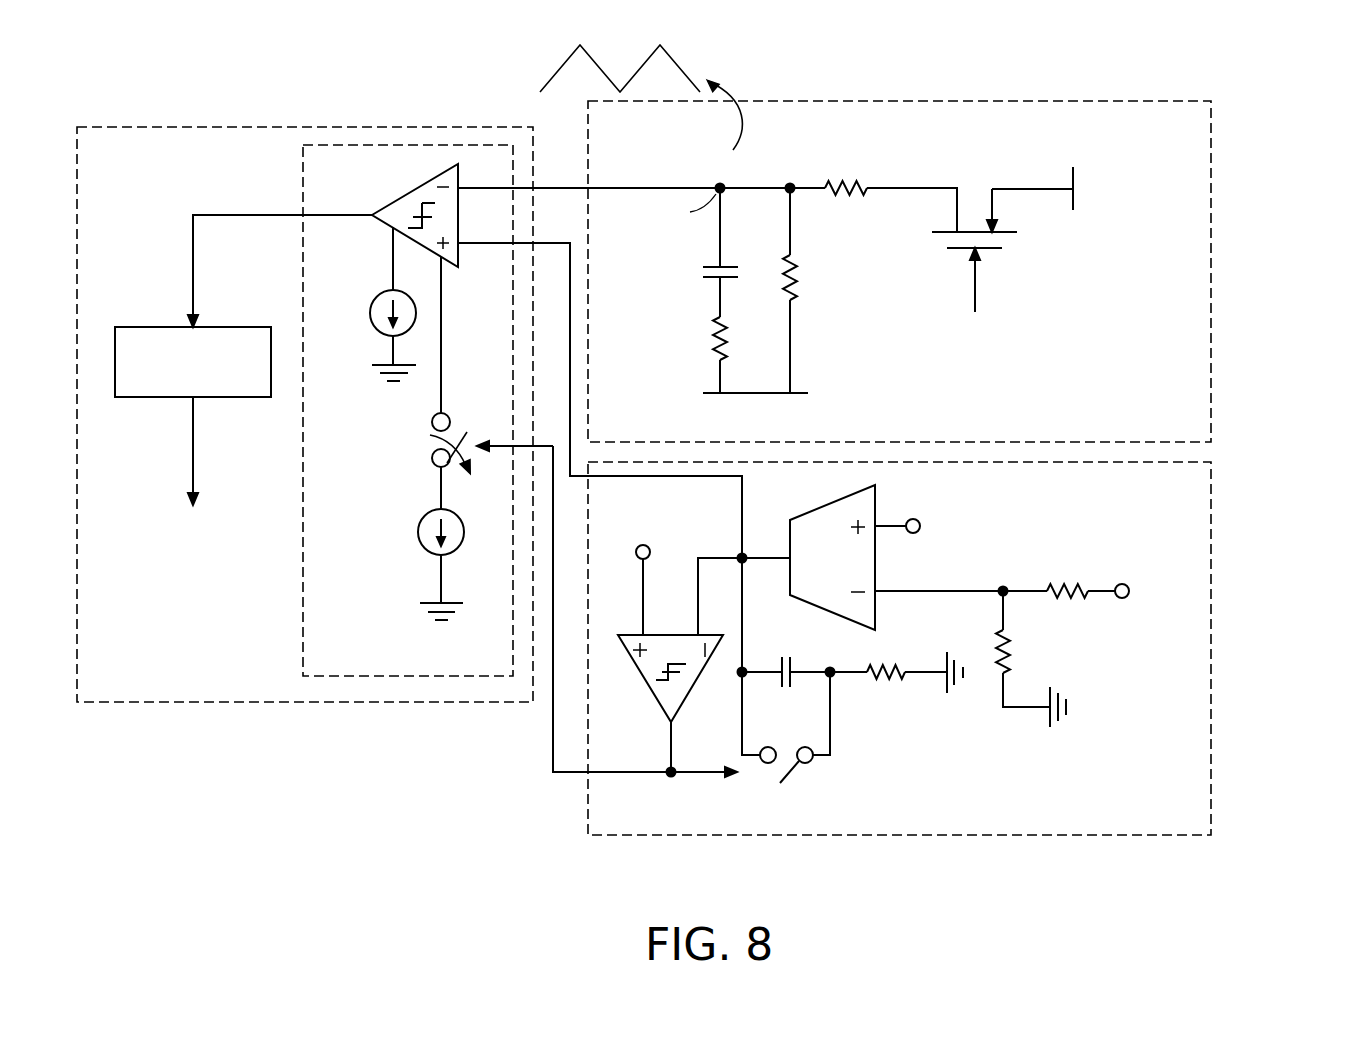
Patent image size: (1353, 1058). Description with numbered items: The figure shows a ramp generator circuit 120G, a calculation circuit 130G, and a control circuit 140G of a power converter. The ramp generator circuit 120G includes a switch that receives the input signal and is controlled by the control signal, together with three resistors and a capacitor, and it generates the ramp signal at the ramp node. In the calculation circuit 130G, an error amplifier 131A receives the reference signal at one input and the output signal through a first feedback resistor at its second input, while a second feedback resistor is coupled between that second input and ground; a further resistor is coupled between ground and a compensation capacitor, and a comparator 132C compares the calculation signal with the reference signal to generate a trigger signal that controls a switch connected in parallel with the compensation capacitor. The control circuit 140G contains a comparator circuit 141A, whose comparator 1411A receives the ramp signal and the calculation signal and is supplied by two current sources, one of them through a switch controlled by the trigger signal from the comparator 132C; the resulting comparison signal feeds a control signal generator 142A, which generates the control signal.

The control circuit 140G is at (133, 126).
The comparator circuit 141A is at (340, 678).
The comparator 1411A is at (403, 193).
The control signal generator 142A is at (160, 375).
The ramp generator circuit 120G is at (1212, 188).
The calculation circuit 130G is at (1212, 546).
The error amplifier 131A is at (796, 571).
The comparator 132C is at (647, 690).